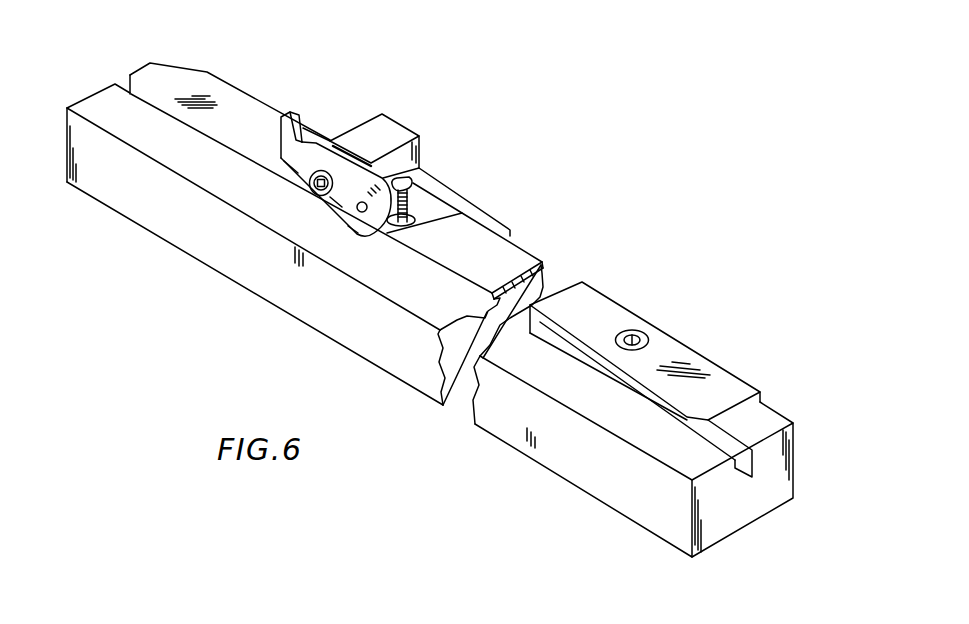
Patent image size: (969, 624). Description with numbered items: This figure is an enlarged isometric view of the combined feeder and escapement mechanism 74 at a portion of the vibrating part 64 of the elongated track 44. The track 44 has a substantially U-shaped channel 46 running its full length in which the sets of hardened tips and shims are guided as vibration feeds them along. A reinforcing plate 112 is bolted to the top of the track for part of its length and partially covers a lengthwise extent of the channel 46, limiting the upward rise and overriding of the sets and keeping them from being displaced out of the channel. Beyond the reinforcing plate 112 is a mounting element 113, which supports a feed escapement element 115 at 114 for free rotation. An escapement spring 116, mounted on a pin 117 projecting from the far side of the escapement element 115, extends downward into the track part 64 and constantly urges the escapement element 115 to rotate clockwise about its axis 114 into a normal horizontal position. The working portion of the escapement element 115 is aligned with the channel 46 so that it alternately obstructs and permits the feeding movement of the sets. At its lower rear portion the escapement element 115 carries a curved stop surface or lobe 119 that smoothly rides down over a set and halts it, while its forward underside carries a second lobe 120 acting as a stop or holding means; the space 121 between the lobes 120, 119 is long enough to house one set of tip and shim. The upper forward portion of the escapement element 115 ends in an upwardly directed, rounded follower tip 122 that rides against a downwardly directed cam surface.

The combined feeder and escapement mechanism 74 is at (408, 80).
The vibrating part of the track 64 is at (147, 218).
The elongated track 44 is at (602, 485).
The channel 46 is at (748, 473).
The reinforcing plate 112 is at (648, 272).
The mounting element 113 is at (405, 128).
The axis 114 is at (314, 193).
The feed escapement element 115 is at (342, 160).
The escapement spring 116 is at (408, 197).
The pin 117 is at (399, 177).
The rear lobe 119 is at (357, 226).
The forward lobe 120 is at (285, 178).
The space between the lobes 121 is at (322, 206).
The follower tip 122 is at (314, 83).